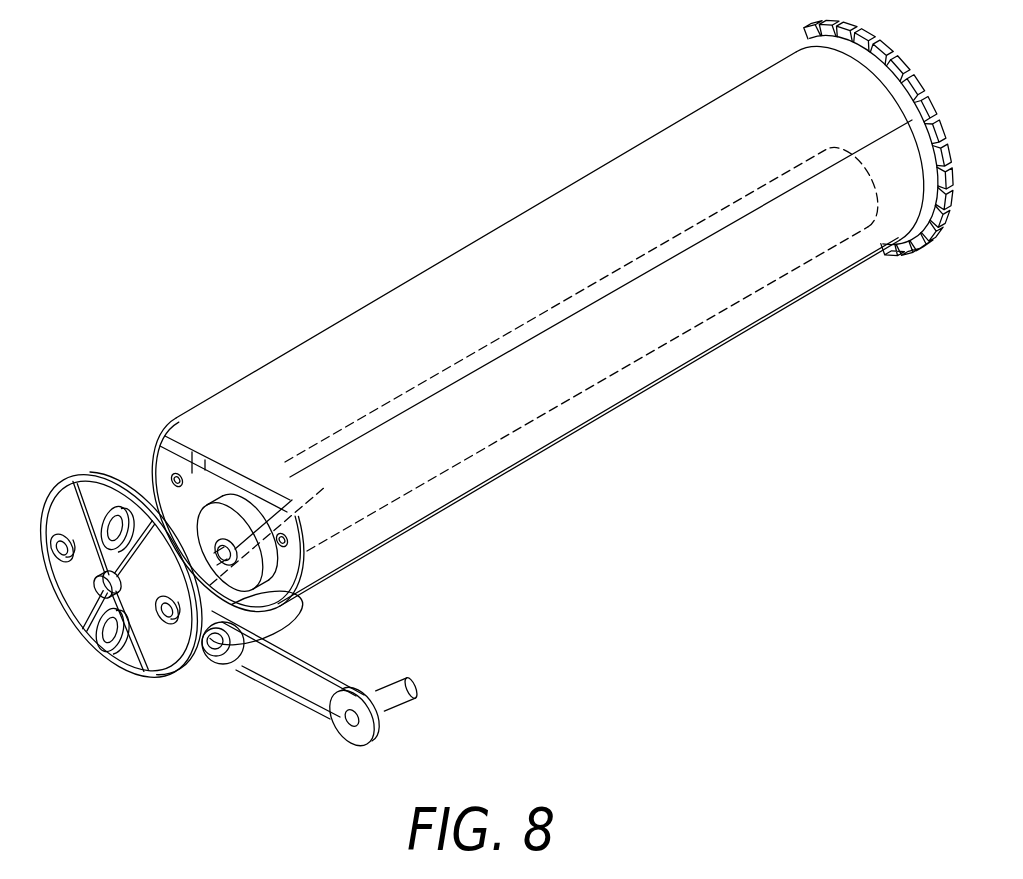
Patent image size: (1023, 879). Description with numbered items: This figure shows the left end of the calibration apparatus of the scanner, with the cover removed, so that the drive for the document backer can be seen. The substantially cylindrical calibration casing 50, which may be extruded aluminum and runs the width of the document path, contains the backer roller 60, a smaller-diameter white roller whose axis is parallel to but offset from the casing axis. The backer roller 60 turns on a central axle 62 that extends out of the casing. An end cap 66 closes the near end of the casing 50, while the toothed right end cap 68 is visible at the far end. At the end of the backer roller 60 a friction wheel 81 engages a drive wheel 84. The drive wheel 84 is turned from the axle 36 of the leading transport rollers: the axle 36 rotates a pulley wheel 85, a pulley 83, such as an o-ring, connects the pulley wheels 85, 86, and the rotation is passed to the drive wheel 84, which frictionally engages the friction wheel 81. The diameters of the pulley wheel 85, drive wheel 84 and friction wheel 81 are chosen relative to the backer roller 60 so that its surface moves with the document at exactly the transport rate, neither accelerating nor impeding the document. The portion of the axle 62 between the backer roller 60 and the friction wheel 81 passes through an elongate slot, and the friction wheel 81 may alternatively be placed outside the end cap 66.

The calibration casing 50 is at (342, 341).
The backer roller 60 is at (798, 162).
The right end cap 68 is at (938, 78).
The end cap 66 is at (66, 484).
The central axle 62 is at (264, 521).
The friction wheel 81 is at (246, 516).
The drive wheel 84 is at (300, 628).
The pulley wheel 85 is at (228, 664).
The pulley 83 is at (284, 694).
The pulley wheel 86 is at (352, 737).
The axle 36 is at (408, 684).